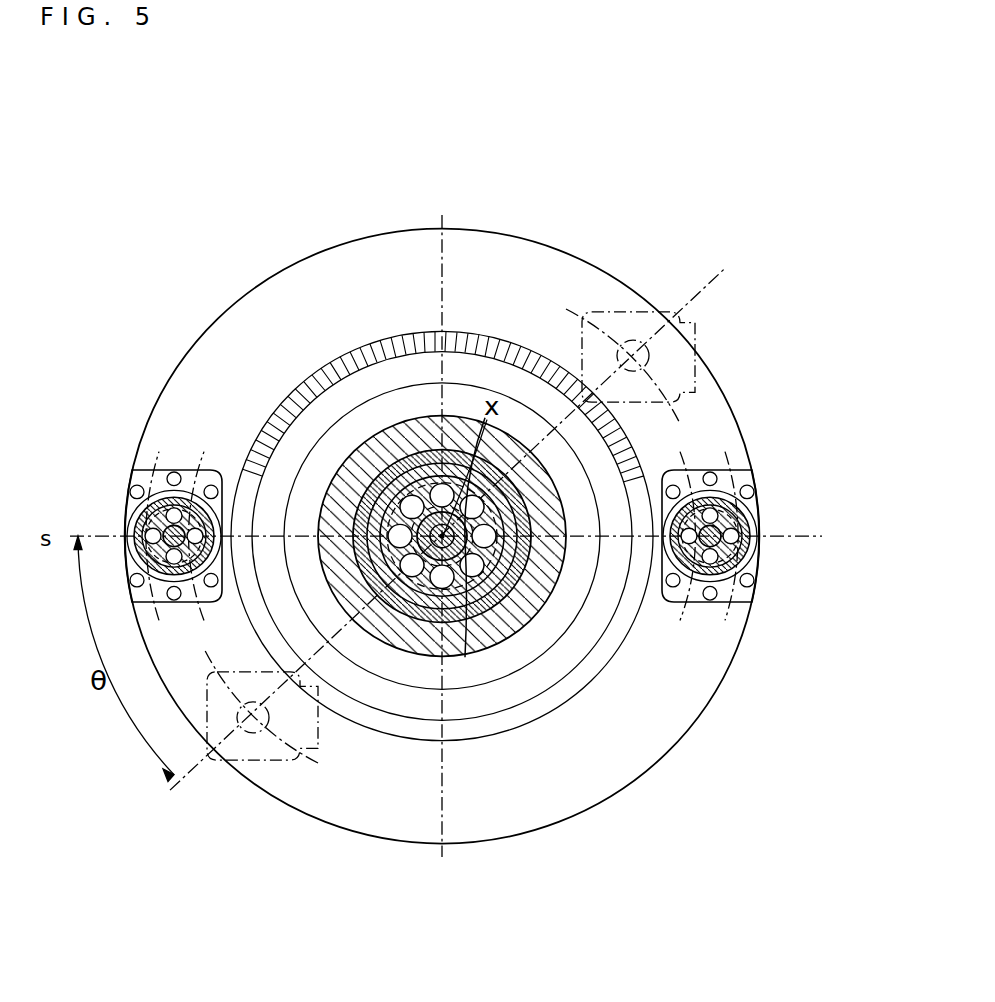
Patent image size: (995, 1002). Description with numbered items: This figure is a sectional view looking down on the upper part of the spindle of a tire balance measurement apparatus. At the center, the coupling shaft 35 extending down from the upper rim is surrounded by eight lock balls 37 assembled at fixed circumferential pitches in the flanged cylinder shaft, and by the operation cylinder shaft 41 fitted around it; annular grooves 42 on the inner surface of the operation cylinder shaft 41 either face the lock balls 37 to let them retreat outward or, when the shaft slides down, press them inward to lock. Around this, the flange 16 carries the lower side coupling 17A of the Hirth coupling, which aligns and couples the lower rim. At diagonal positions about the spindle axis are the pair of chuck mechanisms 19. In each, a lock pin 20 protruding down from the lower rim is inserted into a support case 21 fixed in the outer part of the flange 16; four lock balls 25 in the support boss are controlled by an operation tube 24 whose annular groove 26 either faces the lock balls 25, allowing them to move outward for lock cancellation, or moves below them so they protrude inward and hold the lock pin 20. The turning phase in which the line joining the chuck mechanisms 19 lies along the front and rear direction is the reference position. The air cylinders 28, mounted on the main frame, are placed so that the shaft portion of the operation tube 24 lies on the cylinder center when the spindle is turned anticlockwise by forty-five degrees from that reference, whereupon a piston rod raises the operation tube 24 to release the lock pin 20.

The flange 16 is at (624, 804).
The lower side coupling 17A is at (327, 359).
The chuck mechanism 19 is at (152, 488).
The lock pin 20 is at (192, 507).
The support case 21 is at (160, 561).
The operation tube 24 is at (203, 573).
The lock ball 25 is at (149, 524).
The annular groove 26 is at (160, 567).
The air cylinder 28 is at (619, 304).
The coupling shaft 35 is at (470, 552).
The lock ball 37 is at (363, 500).
The operation cylinder shaft 41 is at (487, 574).
The annular groove 42 is at (432, 600).